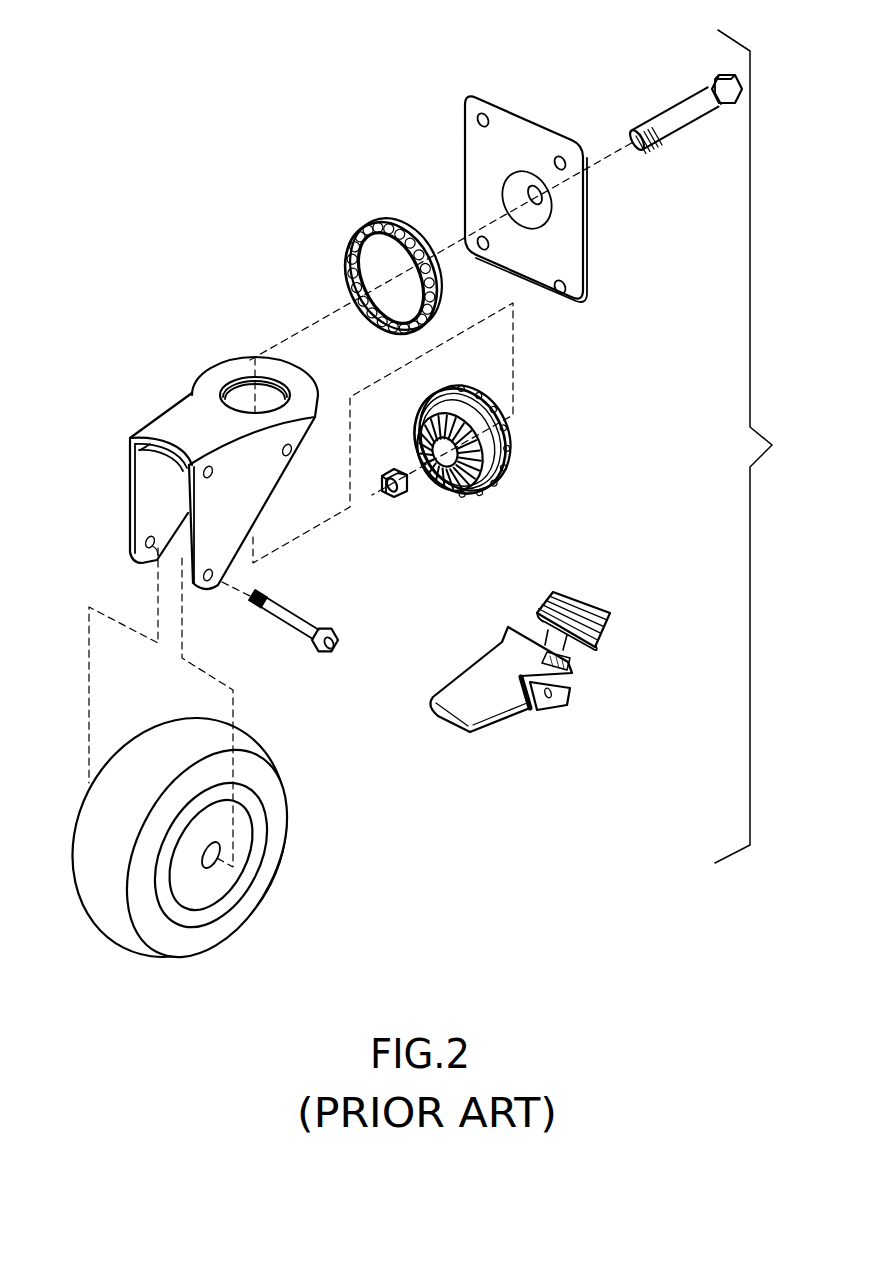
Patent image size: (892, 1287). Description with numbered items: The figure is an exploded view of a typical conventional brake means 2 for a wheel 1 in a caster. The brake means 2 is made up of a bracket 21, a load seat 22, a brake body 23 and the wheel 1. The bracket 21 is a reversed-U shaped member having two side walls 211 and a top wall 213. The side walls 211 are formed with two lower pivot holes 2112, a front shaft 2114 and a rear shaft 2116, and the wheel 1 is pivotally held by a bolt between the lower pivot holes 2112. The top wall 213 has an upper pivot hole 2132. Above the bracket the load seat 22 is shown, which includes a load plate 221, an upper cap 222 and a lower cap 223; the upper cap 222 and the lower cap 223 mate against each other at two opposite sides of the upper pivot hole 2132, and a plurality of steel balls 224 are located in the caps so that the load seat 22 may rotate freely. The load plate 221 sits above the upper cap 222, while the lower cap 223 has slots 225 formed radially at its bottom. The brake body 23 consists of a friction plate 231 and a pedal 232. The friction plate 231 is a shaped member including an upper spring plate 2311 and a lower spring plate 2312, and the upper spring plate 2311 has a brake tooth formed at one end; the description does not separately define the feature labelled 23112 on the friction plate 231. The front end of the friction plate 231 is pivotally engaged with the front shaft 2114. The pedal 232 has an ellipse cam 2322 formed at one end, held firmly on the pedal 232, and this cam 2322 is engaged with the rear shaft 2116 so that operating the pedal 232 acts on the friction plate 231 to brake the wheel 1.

The wheel 1 is at (275, 893).
The brake means 2 is at (414, 446).
The bracket 21 is at (193, 481).
The side walls 211 is at (140, 485).
The lower pivot holes 2112 is at (209, 580).
The front shaft 2114 is at (150, 447).
The rear shaft 2116 is at (290, 452).
The top wall 213 is at (253, 372).
The upper pivot hole 2132 is at (248, 393).
The load seat 22 is at (511, 309).
The load plate 221 is at (573, 253).
The upper cap 222 is at (410, 233).
The lower cap 223 is at (493, 475).
The steel balls 224 is at (360, 252).
The slots 225 is at (443, 483).
The brake body 23 is at (551, 702).
The friction plate 231 is at (506, 702).
The upper spring plate 2311 is at (504, 680).
The boss of lever 23112 is at (508, 624).
The lower spring plate 2312 is at (483, 752).
The pedal 232 is at (616, 677).
The ellipse cam 2322 is at (560, 707).